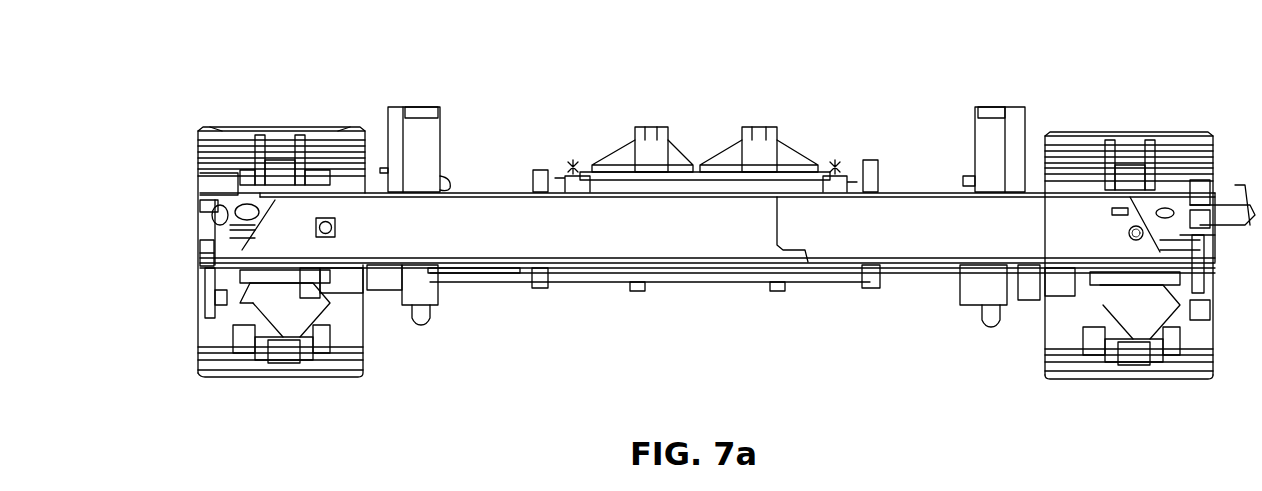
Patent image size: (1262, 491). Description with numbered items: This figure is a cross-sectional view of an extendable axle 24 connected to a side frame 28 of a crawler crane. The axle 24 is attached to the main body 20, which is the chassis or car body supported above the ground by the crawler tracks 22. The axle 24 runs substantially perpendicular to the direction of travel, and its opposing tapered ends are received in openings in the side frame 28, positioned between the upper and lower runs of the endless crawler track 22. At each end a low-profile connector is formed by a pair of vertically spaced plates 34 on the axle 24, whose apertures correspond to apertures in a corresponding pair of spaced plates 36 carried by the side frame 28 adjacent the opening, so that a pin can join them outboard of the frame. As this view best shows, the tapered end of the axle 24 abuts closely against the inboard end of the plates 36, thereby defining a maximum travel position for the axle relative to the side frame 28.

The crawler track 22 is at (291, 104).
The axle 24 is at (716, 246).
The main body 20 is at (715, 282).
The plates 36 is at (200, 232).
The plates 34 is at (198, 263).
The side frame 28 is at (330, 317).